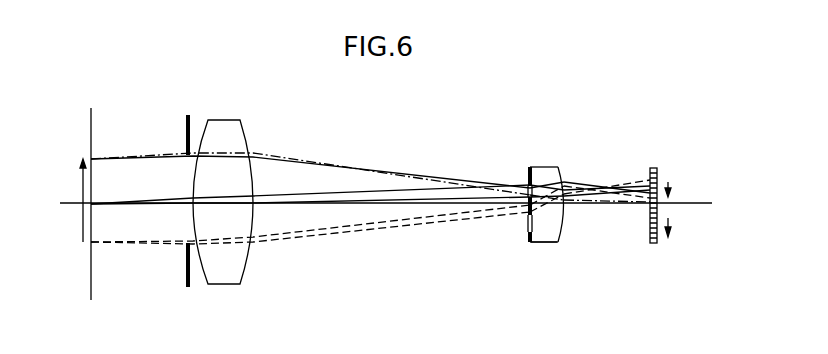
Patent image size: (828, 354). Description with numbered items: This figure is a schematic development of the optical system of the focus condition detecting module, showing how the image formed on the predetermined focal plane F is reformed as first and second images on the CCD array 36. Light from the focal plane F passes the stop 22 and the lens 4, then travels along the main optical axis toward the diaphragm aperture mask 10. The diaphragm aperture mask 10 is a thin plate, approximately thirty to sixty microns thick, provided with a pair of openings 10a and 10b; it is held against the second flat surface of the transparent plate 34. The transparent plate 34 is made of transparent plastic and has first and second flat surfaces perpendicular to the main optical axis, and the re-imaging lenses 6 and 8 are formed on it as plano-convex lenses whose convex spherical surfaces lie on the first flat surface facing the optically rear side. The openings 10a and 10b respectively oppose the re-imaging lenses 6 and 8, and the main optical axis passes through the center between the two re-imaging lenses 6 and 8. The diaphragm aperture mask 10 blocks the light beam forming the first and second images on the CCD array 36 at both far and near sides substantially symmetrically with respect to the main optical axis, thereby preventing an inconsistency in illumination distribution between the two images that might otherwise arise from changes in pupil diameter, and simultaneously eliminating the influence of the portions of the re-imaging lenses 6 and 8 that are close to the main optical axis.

The predetermined focal plane F is at (89, 190).
The stop 22 is at (189, 115).
The objective lens 4 is at (229, 121).
The diaphragm aperture mask 10 is at (529, 168).
The opening 10a is at (527, 187).
The opening 10b is at (527, 228).
The re-imaging lens 6 is at (558, 167).
The re-imaging lens 8 is at (560, 243).
The transparent plate 34 is at (537, 248).
The CCD array 36 is at (653, 168).